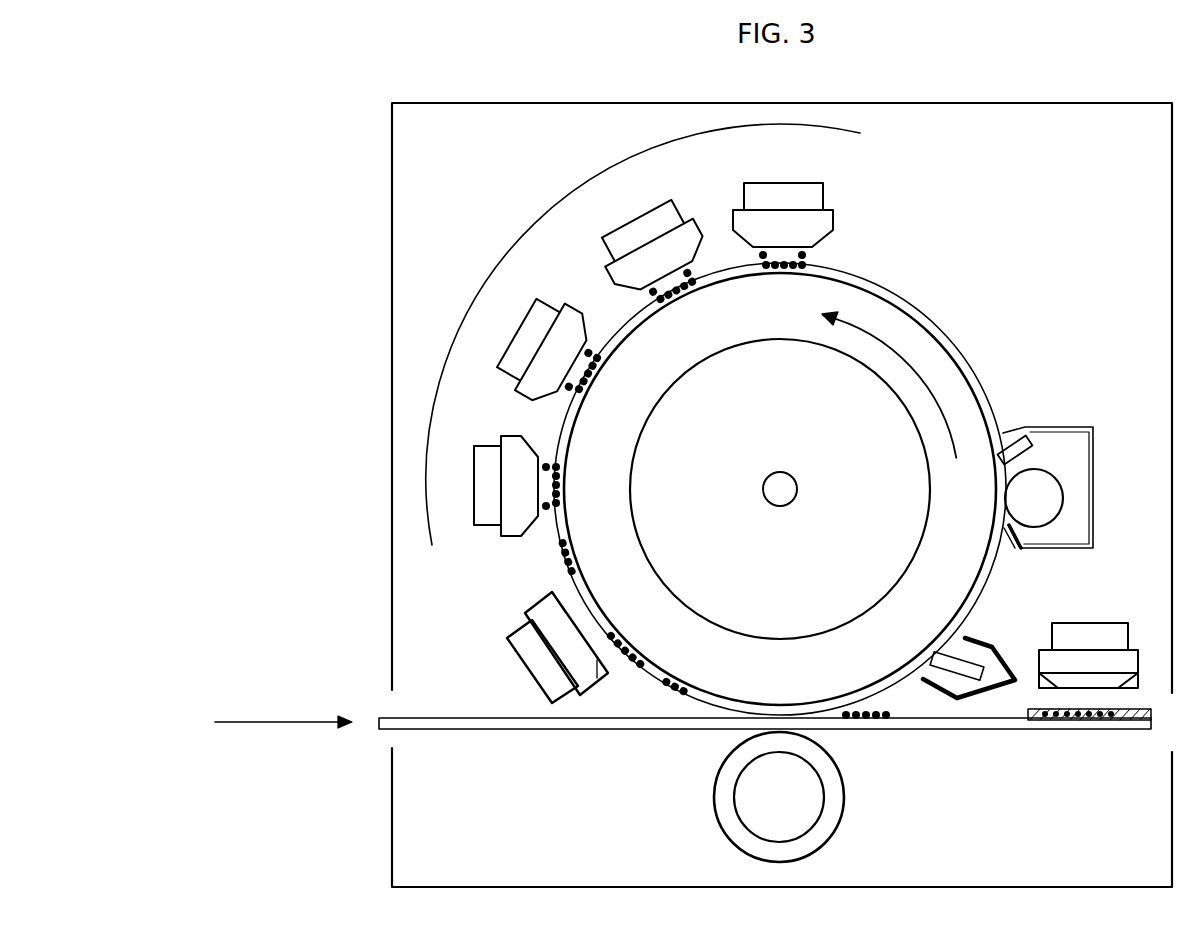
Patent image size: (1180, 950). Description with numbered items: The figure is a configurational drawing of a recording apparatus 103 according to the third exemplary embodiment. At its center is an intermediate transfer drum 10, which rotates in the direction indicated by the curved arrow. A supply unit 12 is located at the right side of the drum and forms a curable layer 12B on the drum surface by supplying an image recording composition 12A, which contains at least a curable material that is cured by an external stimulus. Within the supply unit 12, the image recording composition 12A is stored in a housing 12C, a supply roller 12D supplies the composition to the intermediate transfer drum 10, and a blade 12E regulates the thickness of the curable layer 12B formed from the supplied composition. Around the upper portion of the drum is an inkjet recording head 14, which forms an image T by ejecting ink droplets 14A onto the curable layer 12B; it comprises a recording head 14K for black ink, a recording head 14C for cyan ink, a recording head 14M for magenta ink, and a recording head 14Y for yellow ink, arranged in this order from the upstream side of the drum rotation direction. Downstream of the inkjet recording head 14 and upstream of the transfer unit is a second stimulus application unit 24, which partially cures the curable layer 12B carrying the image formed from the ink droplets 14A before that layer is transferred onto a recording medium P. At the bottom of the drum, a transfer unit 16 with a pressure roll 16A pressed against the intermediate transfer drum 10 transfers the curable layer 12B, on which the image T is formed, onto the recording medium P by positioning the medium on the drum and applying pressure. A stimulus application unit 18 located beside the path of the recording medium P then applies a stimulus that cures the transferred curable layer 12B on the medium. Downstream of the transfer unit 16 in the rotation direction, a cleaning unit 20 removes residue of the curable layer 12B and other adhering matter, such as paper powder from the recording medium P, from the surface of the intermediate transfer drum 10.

The recording apparatus 103 is at (370, 181).
The intermediate transfer drum 10 is at (917, 332).
The supply unit 12 is at (1081, 465).
The image recording composition 12A is at (1058, 443).
The curable layer 12B is at (908, 292).
The housing 12C is at (1077, 447).
The supply roller 12D is at (1037, 522).
The blade 12E is at (1010, 427).
The inkjet recording head 14 is at (537, 233).
The recording head for black ink 14K is at (787, 183).
The recording head for cyan ink 14C is at (635, 220).
The recording head for magenta ink 14M is at (520, 330).
The recording head for yellow ink 14Y is at (472, 468).
The ink droplets 14A is at (805, 256).
The image T is at (565, 568).
The transfer unit 16 is at (703, 797).
The pressure roll 16A is at (779, 797).
The stimulus application unit 18 is at (1108, 623).
The cleaning unit 20 is at (978, 640).
The second stimulus application unit 24 is at (510, 648).
The recording medium P is at (513, 732).